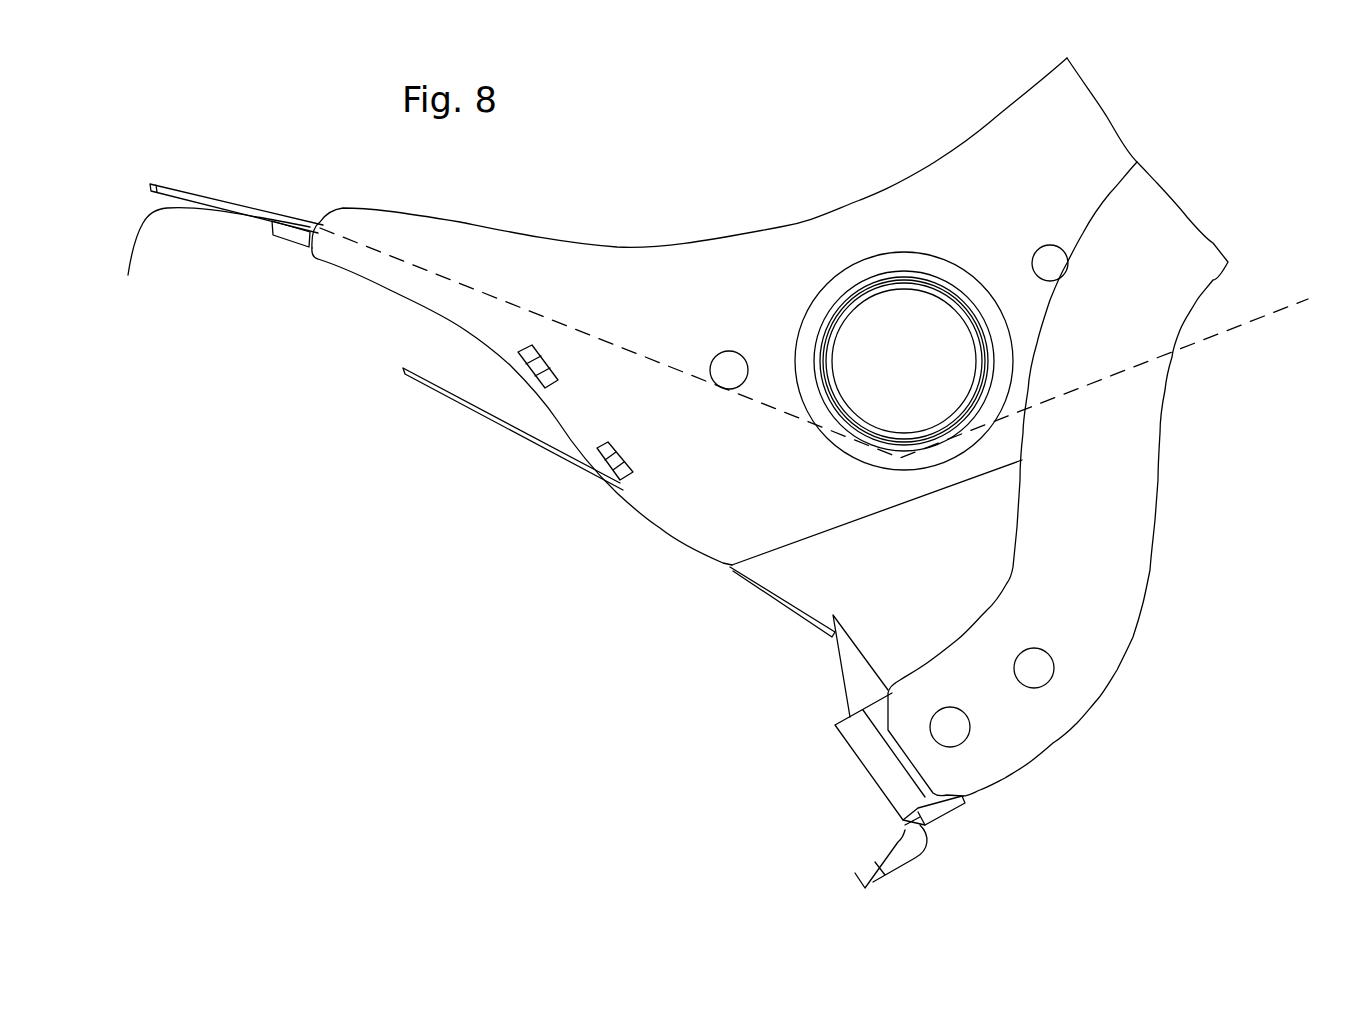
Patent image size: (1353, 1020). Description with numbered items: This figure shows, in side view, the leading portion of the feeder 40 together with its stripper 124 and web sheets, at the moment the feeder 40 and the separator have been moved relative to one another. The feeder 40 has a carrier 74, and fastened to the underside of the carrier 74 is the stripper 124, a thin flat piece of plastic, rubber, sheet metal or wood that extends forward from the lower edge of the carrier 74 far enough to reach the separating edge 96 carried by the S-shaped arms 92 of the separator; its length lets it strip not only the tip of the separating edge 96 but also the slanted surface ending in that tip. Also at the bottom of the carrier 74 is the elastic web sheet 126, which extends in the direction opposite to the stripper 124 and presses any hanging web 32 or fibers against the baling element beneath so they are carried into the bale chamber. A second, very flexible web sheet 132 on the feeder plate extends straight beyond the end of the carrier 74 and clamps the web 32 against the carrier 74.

The web 32 is at (128, 240).
The feeder 40 is at (1217, 307).
The carrier 74 is at (293, 233).
The arms 92 is at (1067, 752).
The separating edge 96 is at (823, 672).
The stripper 124 is at (722, 595).
The web sheet 126 is at (479, 422).
The web sheet 132 is at (178, 188).